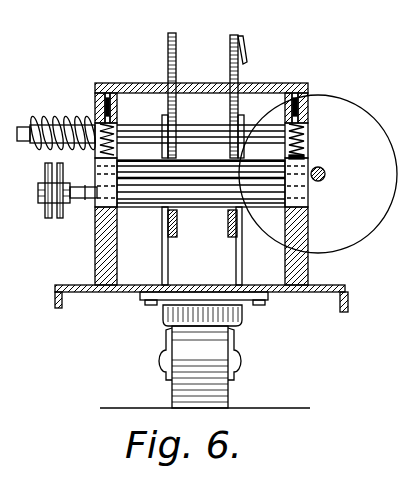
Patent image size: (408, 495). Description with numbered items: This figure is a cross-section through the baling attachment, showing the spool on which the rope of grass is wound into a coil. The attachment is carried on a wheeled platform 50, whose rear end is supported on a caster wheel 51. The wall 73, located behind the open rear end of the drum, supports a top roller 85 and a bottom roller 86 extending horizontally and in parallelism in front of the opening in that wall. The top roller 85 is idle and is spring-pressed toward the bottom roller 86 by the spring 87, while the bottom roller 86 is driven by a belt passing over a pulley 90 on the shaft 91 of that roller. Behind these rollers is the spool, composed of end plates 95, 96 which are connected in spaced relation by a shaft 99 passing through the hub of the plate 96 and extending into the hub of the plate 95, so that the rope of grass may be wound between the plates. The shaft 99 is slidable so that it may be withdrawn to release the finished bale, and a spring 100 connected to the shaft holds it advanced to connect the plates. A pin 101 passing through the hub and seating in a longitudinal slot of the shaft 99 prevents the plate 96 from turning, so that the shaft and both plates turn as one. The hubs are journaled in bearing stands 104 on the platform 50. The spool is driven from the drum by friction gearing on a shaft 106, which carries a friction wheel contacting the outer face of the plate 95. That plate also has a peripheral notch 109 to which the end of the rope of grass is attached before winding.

The wheeled platform 50 is at (305, 293).
The caster wheel 51 is at (232, 396).
The wall 73 is at (304, 238).
The top roller 85 is at (293, 163).
The bottom roller 86 is at (278, 197).
The spring 87 is at (119, 124).
The pulley 90 is at (57, 222).
The shaft 91 is at (87, 201).
The end plate 95 is at (230, 60).
The end plate 96 is at (168, 42).
The shaft 99 is at (36, 120).
The spring 100 is at (72, 110).
The pin 101 is at (374, 127).
The bearing stands 104 is at (235, 262).
The shaft 106 is at (332, 172).
The peripheral notch 109 is at (248, 40).